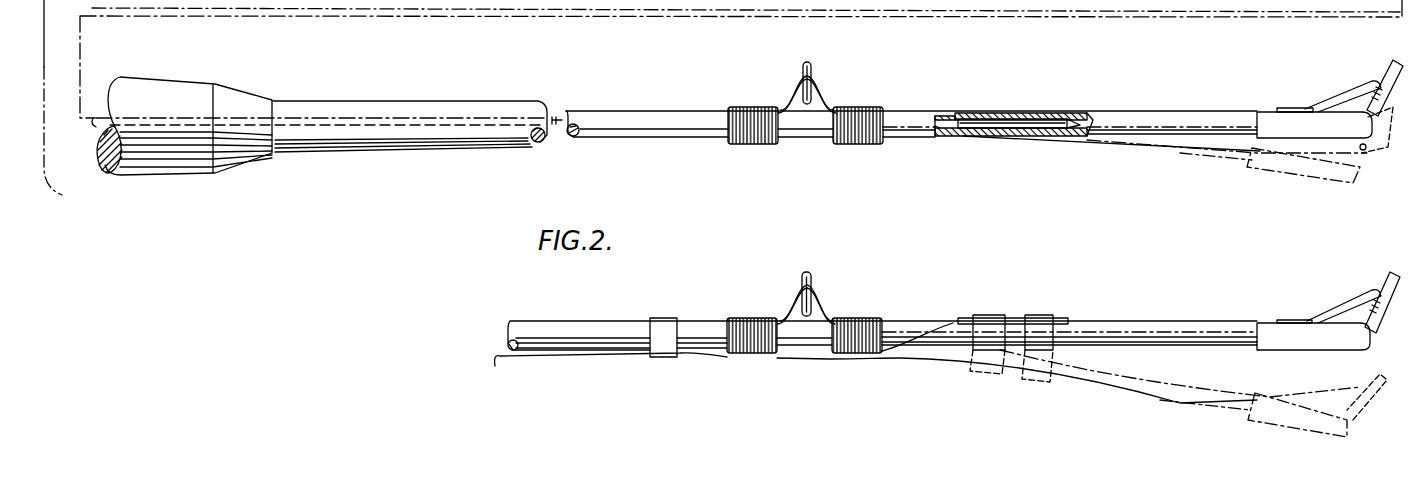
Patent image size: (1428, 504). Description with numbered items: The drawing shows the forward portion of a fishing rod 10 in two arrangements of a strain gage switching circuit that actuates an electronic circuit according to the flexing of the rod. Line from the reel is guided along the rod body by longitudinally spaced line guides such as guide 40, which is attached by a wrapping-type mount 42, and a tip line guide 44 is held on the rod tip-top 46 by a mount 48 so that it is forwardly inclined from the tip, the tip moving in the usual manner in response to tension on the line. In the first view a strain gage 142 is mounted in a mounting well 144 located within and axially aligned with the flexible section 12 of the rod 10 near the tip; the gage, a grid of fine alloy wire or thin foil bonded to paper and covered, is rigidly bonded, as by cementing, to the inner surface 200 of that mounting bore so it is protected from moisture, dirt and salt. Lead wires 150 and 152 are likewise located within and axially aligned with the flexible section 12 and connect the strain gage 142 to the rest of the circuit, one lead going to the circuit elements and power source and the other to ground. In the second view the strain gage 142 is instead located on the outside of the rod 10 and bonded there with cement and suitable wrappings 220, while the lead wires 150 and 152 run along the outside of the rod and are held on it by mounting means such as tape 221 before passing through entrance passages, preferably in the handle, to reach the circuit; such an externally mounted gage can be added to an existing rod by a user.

In FIG. 1, the rod 10 is at (184, 126).
In FIG. 1, the flexible section 12 is at (586, 108).
In FIG. 1, the line guide 40 is at (812, 66).
In FIG. 1, the wrapping-type mount 42 is at (850, 118).
In FIG. 1, the tip line guide 44 is at (1398, 62).
In FIG. 1, the rod tip-top 46 is at (1393, 110).
In FIG. 1, the mount 48 is at (1347, 92).
In FIG. 1, the strain gage 142 is at (997, 113).
In FIG. 1, the mounting well 144 is at (1058, 122).
In FIG. 1, the lead wire 150 is at (940, 117).
In FIG. 2, the lead wire 150 is at (935, 322).
In FIG. 1, the lead wire 152 is at (940, 127).
In FIG. 2, the lead wire 152 is at (943, 325).
In FIG. 1, the inner surface 200 is at (1038, 126).
In FIG. 2, the wrappings 220 is at (1042, 333).
In FIG. 2, the tape 221 is at (663, 330).